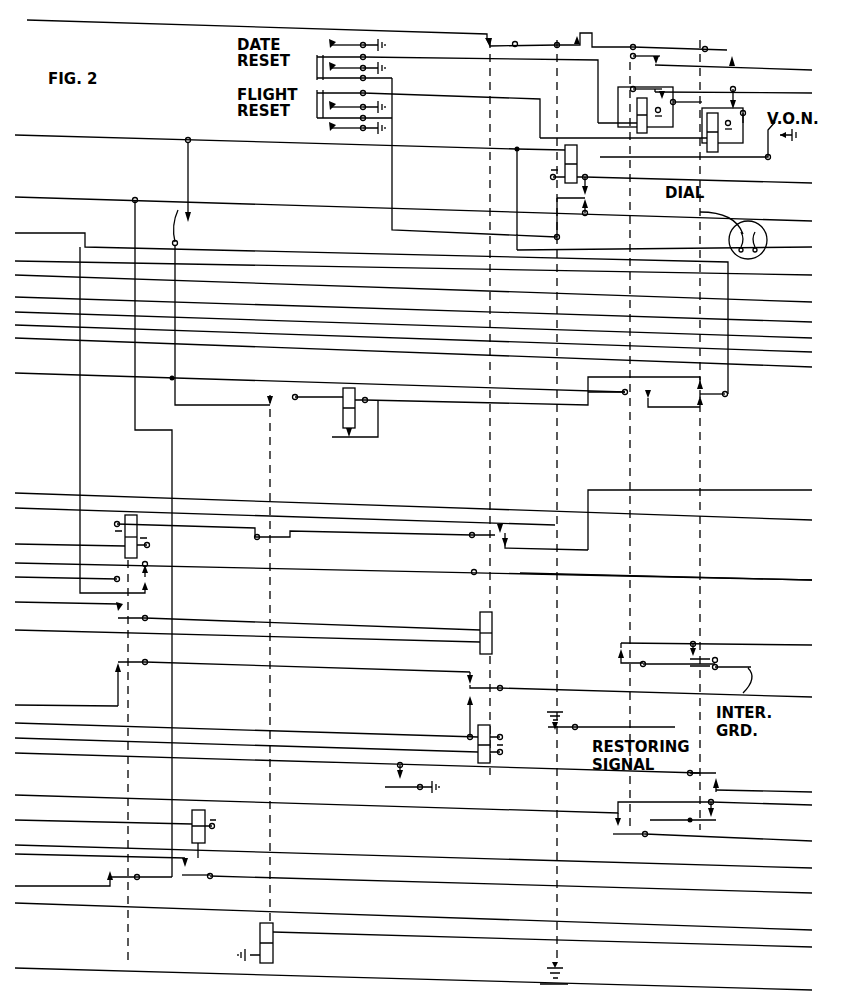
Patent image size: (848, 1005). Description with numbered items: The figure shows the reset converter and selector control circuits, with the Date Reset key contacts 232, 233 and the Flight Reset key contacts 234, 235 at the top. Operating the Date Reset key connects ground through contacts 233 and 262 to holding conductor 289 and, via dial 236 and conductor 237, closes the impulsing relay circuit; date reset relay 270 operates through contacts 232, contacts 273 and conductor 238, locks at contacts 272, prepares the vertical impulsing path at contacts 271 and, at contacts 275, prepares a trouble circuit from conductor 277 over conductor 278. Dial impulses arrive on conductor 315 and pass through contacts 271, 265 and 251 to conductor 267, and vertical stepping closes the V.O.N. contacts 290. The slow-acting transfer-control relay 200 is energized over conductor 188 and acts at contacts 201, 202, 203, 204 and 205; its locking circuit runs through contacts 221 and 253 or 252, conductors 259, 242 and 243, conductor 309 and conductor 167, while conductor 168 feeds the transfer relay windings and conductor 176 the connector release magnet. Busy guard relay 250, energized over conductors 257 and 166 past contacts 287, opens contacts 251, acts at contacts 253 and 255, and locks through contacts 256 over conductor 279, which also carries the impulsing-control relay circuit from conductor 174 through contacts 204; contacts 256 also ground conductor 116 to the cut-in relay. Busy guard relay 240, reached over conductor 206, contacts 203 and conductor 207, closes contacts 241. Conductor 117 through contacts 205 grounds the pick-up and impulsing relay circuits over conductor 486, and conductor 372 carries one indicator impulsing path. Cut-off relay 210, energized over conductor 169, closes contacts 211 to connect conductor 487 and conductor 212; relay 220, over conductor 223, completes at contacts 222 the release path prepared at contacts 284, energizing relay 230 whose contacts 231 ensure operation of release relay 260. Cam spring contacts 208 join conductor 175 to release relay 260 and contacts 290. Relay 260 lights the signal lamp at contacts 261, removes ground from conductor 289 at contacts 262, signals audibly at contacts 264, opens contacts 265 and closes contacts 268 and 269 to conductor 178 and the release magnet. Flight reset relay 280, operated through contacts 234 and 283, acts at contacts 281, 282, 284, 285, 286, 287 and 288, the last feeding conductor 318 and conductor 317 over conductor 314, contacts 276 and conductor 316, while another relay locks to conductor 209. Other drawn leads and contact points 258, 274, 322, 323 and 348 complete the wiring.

The conductor 116 is at (66, 722).
The conductor 117 is at (59, 882).
The conductor 166 is at (66, 752).
The conductor 167 is at (66, 577).
The conductor 168 is at (66, 562).
The conductor 169 is at (66, 819).
The conductor 174 is at (66, 703).
The conductor 175 is at (66, 371).
The conductor 176 is at (66, 232).
The conductor 178 is at (66, 967).
The conductor 188 is at (66, 543).
The slow-acting transfer-control relay 200 is at (140, 529).
The contacts 201 is at (148, 577).
The contacts 202 is at (150, 592).
The contacts 203 is at (132, 615).
The contacts 204 is at (150, 668).
The contacts 205 is at (118, 884).
The conductor 206 is at (66, 601).
The conductor 207 is at (66, 629).
The contacts of cam springs CAM 208 is at (196, 236).
The conductor 209 is at (66, 132).
The cut-off relay 210 is at (206, 832).
The contacts 211 is at (200, 872).
The conductor 212 is at (59, 856).
The relay 220 is at (273, 950).
The contacts 221 is at (290, 536).
The contacts 222 is at (262, 405).
The conductor 223 is at (762, 946).
The relay 230 is at (343, 410).
The contacts 231 is at (338, 436).
The contacts of Date Reset key 232 is at (323, 42).
The contacts of Date Reset key 233 is at (375, 70).
The contacts of Flight Reset key 234 is at (375, 104).
The contacts of Flight Reset key 235 is at (316, 126).
The dial 236 is at (704, 217).
The conductor 237 is at (767, 240).
The conductor 238 is at (770, 91).
The busy guard relay 240 is at (492, 625).
The contacts 241 is at (390, 786).
The conductor 242 is at (66, 508).
The conductor 243 is at (66, 492).
The busy guard relay 250 is at (492, 732).
The contacts 251 is at (485, 40).
The contacts 252 is at (505, 532).
The contacts 253 is at (500, 545).
The contacts 255 is at (486, 678).
The contacts 256 is at (466, 696).
The conductor 257 is at (66, 737).
The conductor 258 is at (762, 787).
The conductor 259 is at (762, 489).
The release relay 260 is at (580, 166).
The contacts 261 is at (590, 191).
The contacts 262 is at (590, 208).
The contacts 264 is at (571, 719).
The contacts 265 is at (570, 42).
The conductor 267 is at (70, 18).
The contacts 268 is at (642, 717).
The contacts 269 is at (567, 970).
The date reset relay 270 is at (637, 118).
The contacts 271 is at (628, 58).
The contacts 272 is at (634, 86).
The contacts 273 is at (664, 88).
The relay contact 274 is at (640, 402).
The contacts 275 is at (618, 658).
The contacts 276 is at (616, 830).
The conductor 277 is at (725, 671).
The conductor 278 is at (762, 643).
The conductor 279 is at (762, 695).
The flight reset relay 280 is at (707, 137).
The contacts 281 is at (734, 36).
The contacts 282 is at (678, 104).
The contacts 283 is at (740, 112).
The contacts 284 is at (712, 387).
The contacts 285 is at (710, 402).
The contacts 286 is at (691, 644).
The contacts 287 is at (705, 782).
The contacts 288 is at (720, 823).
The holding conductor 289 is at (66, 194).
The contacts of vertical off-normal springs V.O.N. 290 is at (702, 141).
The conductor 309 is at (762, 579).
The conductor 314 is at (762, 803).
The conductor 315 is at (770, 68).
The conductor 316 is at (762, 837).
The conductor 317 is at (66, 844).
The conductor 318 is at (66, 793).
The conductor 322 is at (128, 280).
The conductor 323 is at (128, 256).
The conductor 348 is at (770, 181).
The conductor 372 is at (66, 295).
The conductor 486 is at (59, 902).
The conductor 487 is at (762, 891).